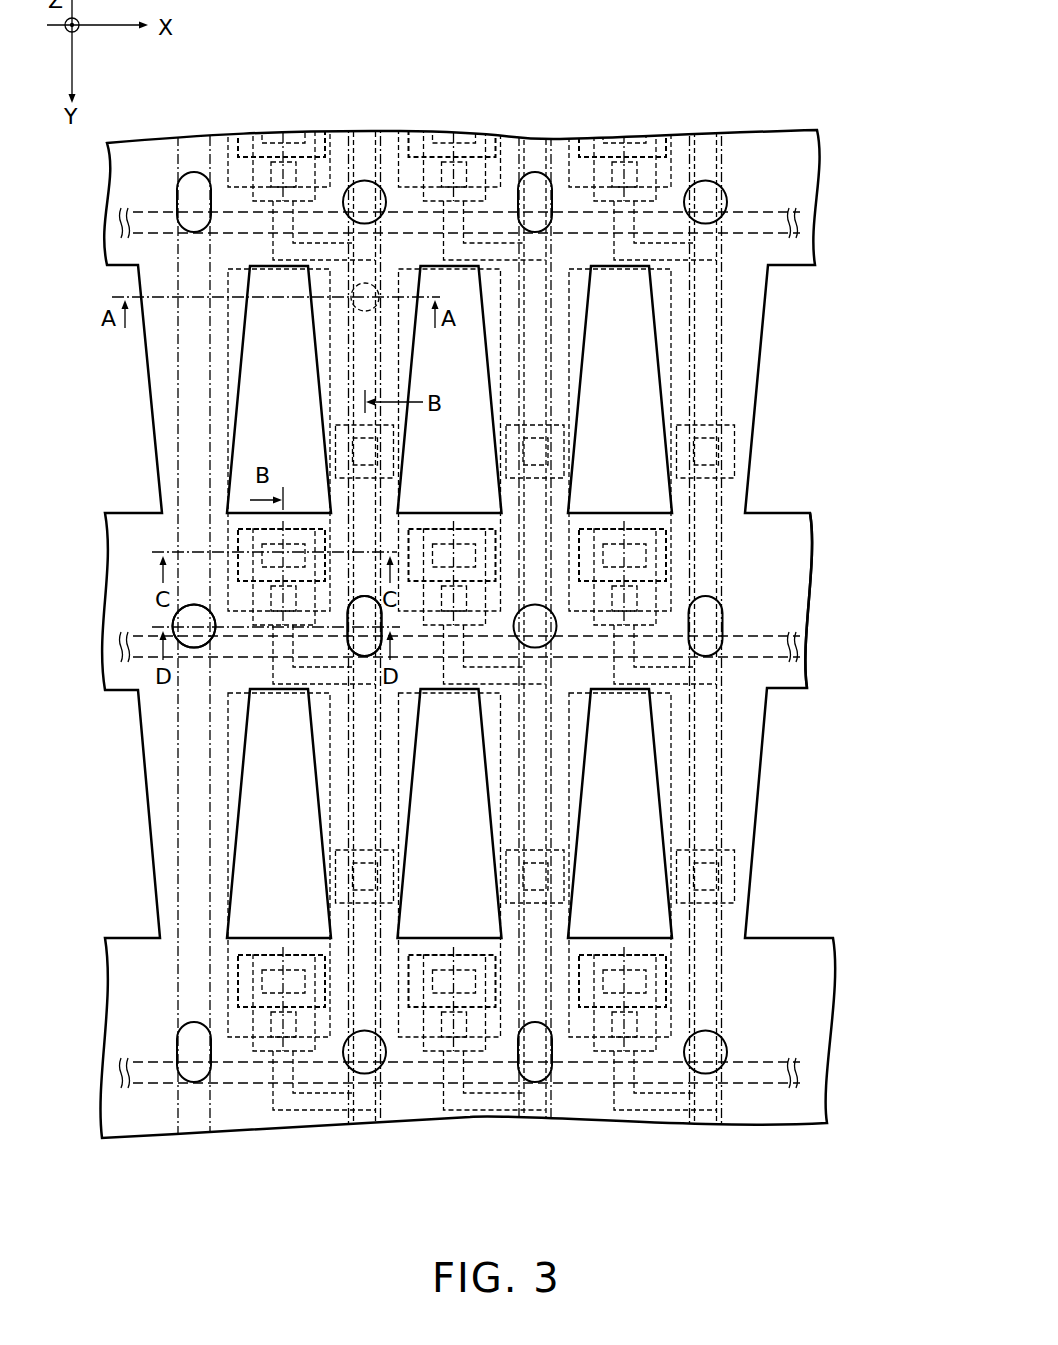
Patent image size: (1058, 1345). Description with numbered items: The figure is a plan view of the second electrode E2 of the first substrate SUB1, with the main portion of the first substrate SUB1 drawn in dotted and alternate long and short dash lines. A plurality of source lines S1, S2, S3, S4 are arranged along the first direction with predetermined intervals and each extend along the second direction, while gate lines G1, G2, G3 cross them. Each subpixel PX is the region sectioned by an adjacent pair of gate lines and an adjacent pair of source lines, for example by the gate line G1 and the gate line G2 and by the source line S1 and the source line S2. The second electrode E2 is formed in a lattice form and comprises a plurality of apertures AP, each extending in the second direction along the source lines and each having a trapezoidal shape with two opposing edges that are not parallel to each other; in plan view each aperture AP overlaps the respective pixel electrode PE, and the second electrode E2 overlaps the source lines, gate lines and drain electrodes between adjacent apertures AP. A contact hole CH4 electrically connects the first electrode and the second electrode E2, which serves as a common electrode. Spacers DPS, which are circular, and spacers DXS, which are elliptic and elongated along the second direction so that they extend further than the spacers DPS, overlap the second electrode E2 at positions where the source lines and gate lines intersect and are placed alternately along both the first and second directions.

The first substrate SUB1 is at (826, 162).
The subpixel PX is at (229, 250).
The aperture AP is at (234, 375).
The pixel electrode PE is at (237, 417).
The contact hole CH4 is at (372, 322).
The spacer DPS is at (174, 621).
The spacer DXS is at (358, 656).
The second electrode E2 is at (785, 576).
The gate line G1 is at (460, 205).
The gate line G2 is at (460, 629).
The gate line G3 is at (460, 1055).
The source line S1 is at (194, 625).
The source line S2 is at (365, 625).
The source line S3 is at (535, 625).
The source line S4 is at (706, 625).